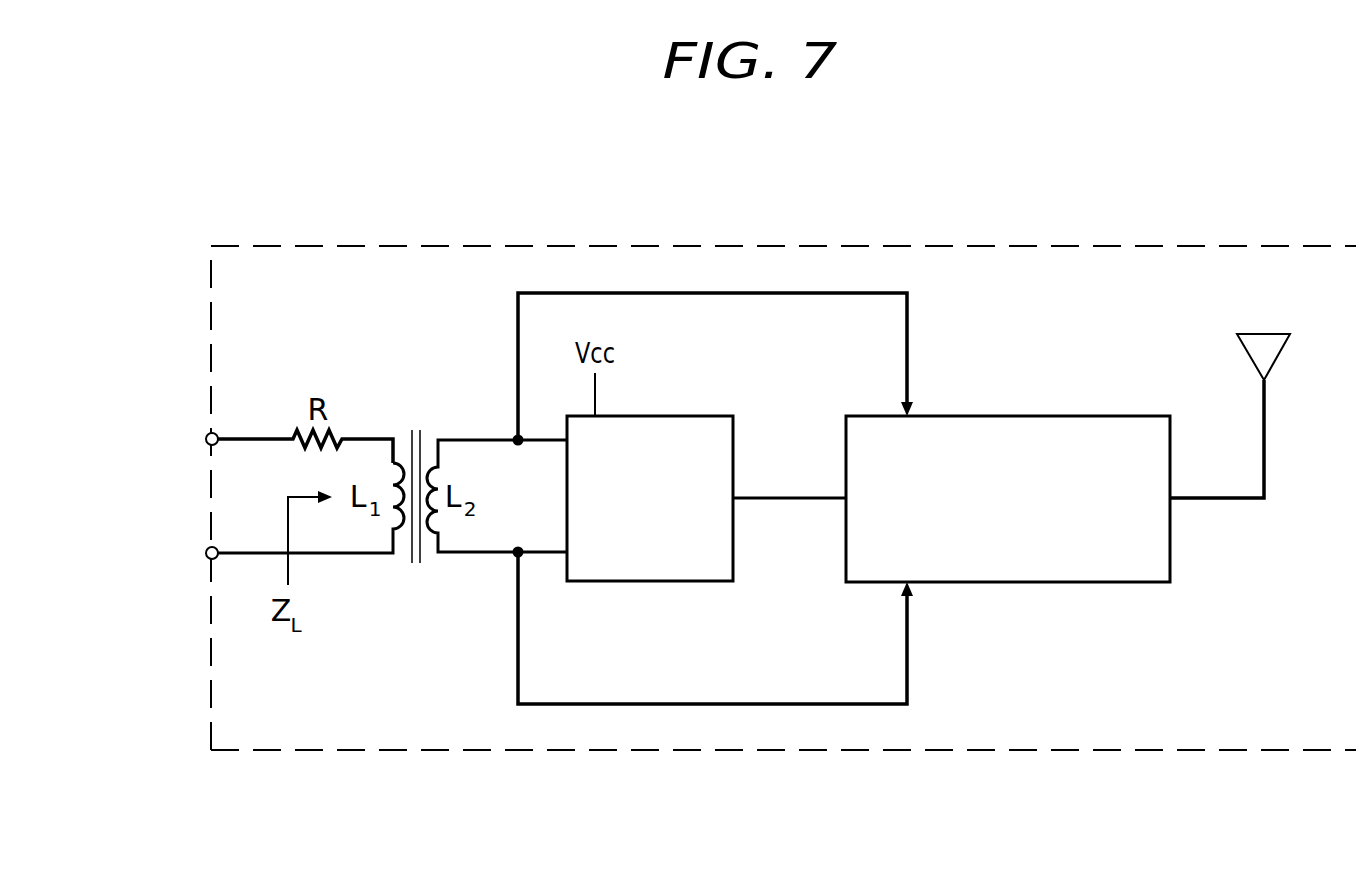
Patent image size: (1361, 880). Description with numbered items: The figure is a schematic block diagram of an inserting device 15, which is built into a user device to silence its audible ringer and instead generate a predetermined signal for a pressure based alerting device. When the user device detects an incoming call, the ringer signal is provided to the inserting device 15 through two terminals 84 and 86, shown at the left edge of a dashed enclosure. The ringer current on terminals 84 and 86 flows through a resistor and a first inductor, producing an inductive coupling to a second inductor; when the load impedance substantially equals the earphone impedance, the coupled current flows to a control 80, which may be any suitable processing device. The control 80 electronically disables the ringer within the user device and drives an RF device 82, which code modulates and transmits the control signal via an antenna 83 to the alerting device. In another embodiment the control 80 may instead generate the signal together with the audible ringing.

The inserting device 15 is at (1121, 246).
The control 80 is at (649, 582).
The RF device 82 is at (1007, 582).
The antenna 83 is at (1276, 356).
The terminal 84 is at (205, 439).
The terminal 86 is at (205, 553).